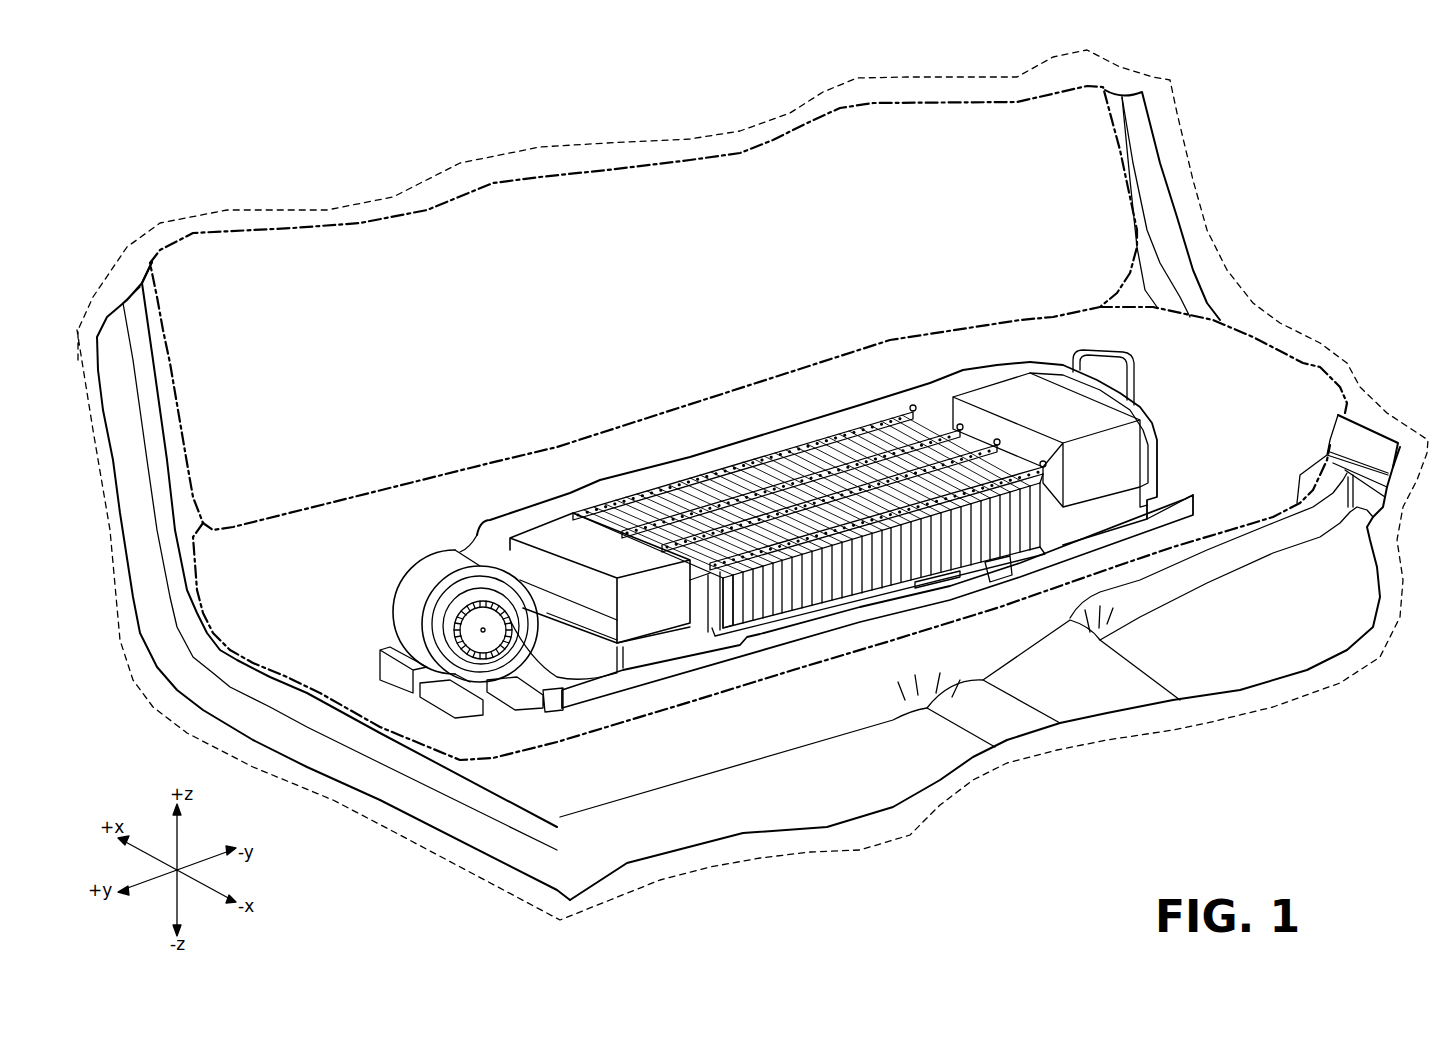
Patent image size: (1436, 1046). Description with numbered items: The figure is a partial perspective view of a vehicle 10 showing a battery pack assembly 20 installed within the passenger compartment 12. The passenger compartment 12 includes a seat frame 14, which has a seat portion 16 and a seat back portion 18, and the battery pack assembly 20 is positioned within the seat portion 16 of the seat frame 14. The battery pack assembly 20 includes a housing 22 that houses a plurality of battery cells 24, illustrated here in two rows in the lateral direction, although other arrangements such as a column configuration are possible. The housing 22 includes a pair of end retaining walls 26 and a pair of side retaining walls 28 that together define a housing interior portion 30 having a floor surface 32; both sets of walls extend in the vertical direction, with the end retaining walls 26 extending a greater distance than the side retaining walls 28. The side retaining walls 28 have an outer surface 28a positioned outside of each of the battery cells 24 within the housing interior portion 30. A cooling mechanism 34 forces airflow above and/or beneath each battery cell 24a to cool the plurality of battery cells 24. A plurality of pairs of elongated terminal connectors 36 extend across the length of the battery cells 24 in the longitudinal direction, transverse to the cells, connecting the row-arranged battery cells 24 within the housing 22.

The vehicle 10 is at (170, 116).
The passenger compartment 12 is at (123, 679).
The seat frame 14 is at (872, 793).
The seat portion 16 is at (1357, 450).
The seat back portion 18 is at (1143, 155).
The battery pack assembly 20 is at (688, 449).
The housing 22 is at (870, 620).
The plurality of battery cells 24 is at (768, 632).
The battery cell 24a is at (732, 618).
The end retaining walls 26 is at (713, 598).
The side retaining walls 28 is at (807, 624).
The outer surface 28a is at (923, 577).
The housing interior portion 30 is at (922, 402).
The floor surface 32 is at (1000, 577).
The cooling mechanism 34 is at (420, 600).
The elongated terminal connectors 36 is at (906, 406).